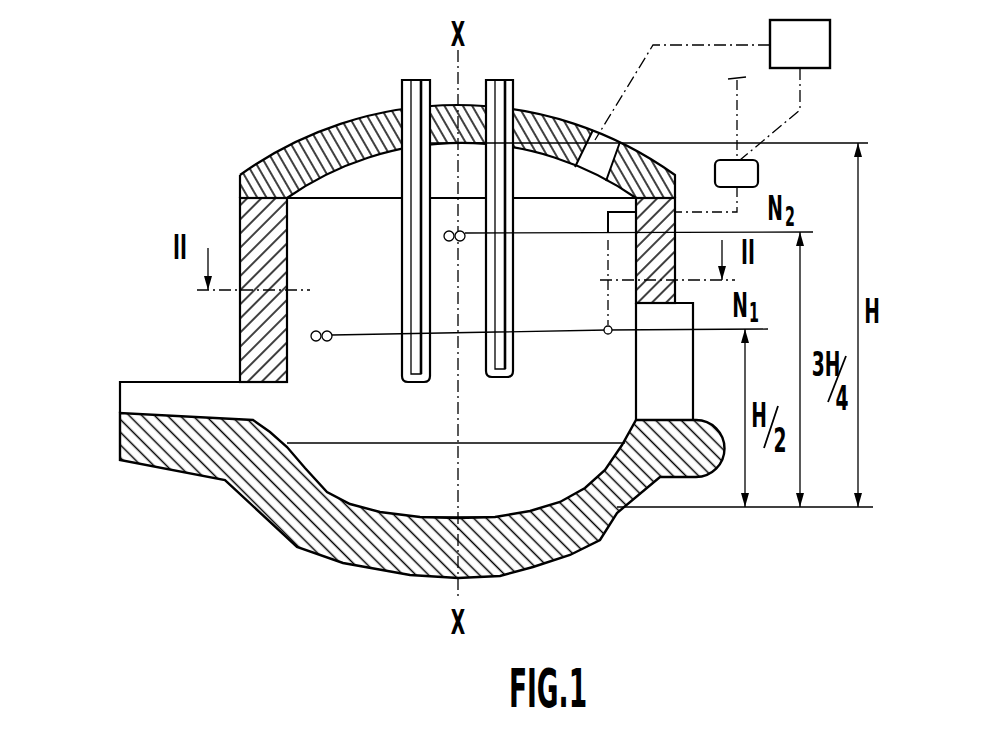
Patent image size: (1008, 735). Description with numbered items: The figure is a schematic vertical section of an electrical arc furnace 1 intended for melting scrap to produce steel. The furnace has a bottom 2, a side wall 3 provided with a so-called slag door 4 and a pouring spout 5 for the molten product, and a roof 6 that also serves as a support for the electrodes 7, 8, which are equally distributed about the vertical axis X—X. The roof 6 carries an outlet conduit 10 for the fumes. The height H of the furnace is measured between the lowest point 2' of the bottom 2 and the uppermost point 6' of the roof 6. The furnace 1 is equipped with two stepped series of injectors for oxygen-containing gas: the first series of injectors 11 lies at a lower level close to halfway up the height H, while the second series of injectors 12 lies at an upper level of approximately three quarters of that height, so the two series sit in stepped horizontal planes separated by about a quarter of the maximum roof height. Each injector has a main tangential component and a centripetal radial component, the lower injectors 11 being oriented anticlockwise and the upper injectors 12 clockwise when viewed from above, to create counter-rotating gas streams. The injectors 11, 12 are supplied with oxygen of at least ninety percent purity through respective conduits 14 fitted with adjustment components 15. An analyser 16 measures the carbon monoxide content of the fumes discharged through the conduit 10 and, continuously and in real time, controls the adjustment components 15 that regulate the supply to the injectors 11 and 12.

The furnace 1 is at (424, 299).
The bottom 2 is at (422, 507).
The lowest point of the bottom 2' is at (460, 487).
The side wall 3 is at (433, 290).
The slag door 4 is at (674, 361).
The pouring spout 5 is at (180, 373).
The roof 6 is at (457, 125).
The uppermost point of the roof 6' is at (458, 169).
The electrode 7 is at (392, 231).
The electrode 8 is at (518, 228).
The outlet conduit 10 is at (595, 112).
The first series of injectors 11 is at (539, 363).
The second series of injectors 12 is at (584, 267).
The conduit 14 is at (598, 268).
The adjustment component 15 is at (741, 144).
The analyser 16 is at (732, 90).